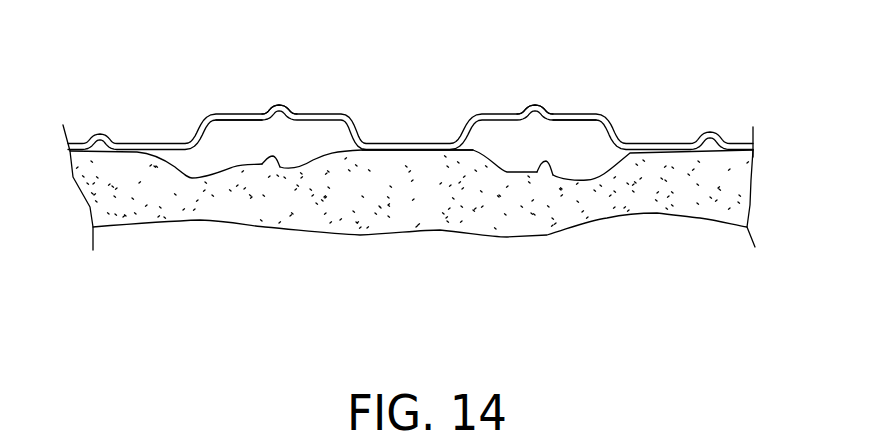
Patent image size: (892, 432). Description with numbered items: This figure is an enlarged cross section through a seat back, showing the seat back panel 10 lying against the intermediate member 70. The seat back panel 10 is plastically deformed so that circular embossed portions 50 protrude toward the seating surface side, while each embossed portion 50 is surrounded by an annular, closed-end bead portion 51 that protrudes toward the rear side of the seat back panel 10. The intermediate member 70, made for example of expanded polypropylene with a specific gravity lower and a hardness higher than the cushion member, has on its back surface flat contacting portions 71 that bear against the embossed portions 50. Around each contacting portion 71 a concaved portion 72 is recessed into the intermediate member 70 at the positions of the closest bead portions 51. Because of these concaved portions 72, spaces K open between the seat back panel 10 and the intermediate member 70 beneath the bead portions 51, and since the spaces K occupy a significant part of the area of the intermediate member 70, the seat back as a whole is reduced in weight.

The seat back panel 10 is at (427, 167).
The embossed portion 50 is at (410, 143).
The bead portion 51 is at (278, 103).
The space K is at (243, 142).
The intermediate member 70 is at (700, 205).
The contacting portion 71 is at (397, 152).
The concaved portion 72 is at (273, 160).